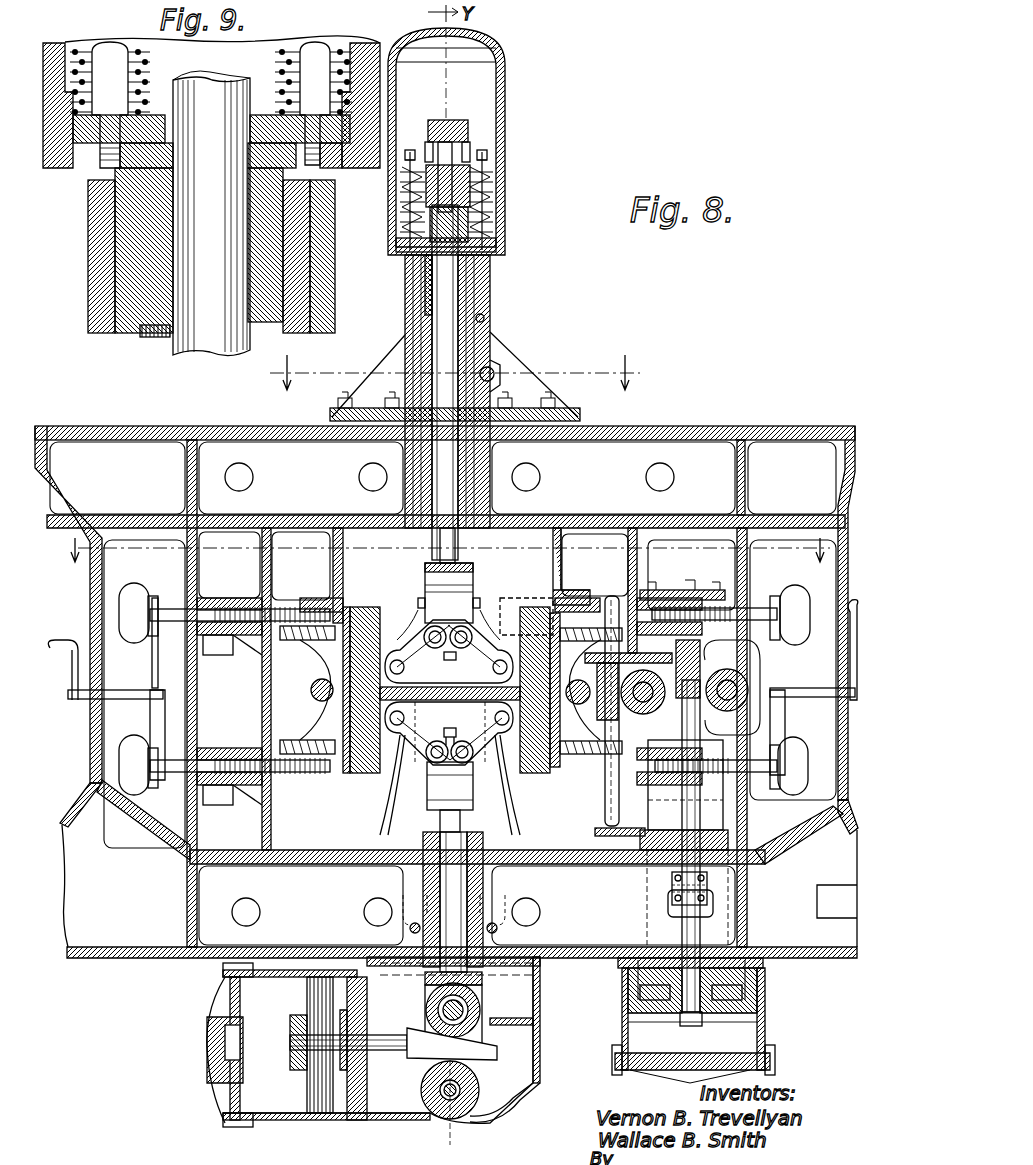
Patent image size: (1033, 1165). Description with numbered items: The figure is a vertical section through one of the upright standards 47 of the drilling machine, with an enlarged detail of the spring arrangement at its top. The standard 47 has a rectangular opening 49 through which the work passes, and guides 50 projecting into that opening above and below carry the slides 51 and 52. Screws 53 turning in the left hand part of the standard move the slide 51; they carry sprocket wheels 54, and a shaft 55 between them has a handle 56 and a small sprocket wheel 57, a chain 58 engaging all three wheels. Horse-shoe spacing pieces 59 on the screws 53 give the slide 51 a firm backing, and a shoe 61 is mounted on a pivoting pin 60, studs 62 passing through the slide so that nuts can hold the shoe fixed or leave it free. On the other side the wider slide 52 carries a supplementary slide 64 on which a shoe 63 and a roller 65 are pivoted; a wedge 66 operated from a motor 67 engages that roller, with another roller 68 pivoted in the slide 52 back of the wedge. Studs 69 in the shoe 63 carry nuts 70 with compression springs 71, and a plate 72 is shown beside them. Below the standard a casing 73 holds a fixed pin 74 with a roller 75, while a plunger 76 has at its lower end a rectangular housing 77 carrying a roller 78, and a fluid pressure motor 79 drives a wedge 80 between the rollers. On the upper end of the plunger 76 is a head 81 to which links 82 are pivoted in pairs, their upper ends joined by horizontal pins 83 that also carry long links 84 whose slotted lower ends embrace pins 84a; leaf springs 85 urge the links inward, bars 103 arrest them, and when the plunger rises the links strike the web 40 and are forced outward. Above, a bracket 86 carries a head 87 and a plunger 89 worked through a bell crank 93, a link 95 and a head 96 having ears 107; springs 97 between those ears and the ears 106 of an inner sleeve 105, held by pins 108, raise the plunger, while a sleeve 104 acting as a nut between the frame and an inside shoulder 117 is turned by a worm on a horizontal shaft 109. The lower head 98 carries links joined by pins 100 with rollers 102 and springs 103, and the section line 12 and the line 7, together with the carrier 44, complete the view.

In FIG. 8, the section line 7- 7 is at (453, 550).
In FIG. 8, the section line 12- 12 is at (461, 372).
In FIG. 8, the web 40 is at (450, 676).
In FIG. 8, the roller carrier plate 44 is at (449, 651).
In FIG. 8, the upright standard 47 is at (133, 426).
In FIG. 8, the rectangular opening 49 is at (355, 514).
In FIG. 8, the guides 50 is at (358, 530).
In FIG. 8, the slide 51 is at (449, 665).
In FIG. 8, the slide 52 is at (553, 570).
In FIG. 8, the screw 53 is at (232, 606).
In FIG. 8, the sprocket wheel 54 is at (158, 600).
In FIG. 8, the shaft 55 is at (90, 699).
In FIG. 8, the handle 56 is at (72, 660).
In FIG. 8, the small sprocket wheel 57 is at (155, 690).
In FIG. 8, the chain 58 is at (150, 720).
In FIG. 8, the spacing piece 59 is at (215, 655).
In FIG. 8, the pivoting pin 60 is at (318, 700).
In FIG. 8, the shoe 61 is at (345, 773).
In FIG. 8, the stud 62 is at (305, 626).
In FIG. 8, the shoe 63 is at (555, 773).
In FIG. 8, the supplementary slide 64 is at (640, 658).
In FIG. 8, the roller 65 is at (684, 792).
In FIG. 8, the wedge 66 is at (688, 655).
In FIG. 8, the motor 67 is at (740, 1030).
In FIG. 8, the roller 68 is at (740, 712).
In FIG. 8, the stud 69 is at (545, 582).
In FIG. 8, the nut 70 is at (611, 596).
In FIG. 8, the compression spring 71 is at (618, 780).
In FIG. 8, the cover plate 72 is at (668, 590).
In FIG. 8, the casing 73 is at (515, 1100).
In FIG. 8, the fixed pin 74 is at (440, 1105).
In FIG. 8, the roller 75 is at (460, 1115).
In FIG. 8, the plunger 76 is at (467, 895).
In FIG. 8, the rectangular housing 77 is at (485, 985).
In FIG. 8, the roller 78 is at (433, 1005).
In FIG. 8, the fluid pressure motor 79 is at (240, 1060).
In FIG. 8, the wedge 80 is at (420, 1055).
In FIG. 8, the head 81 is at (450, 797).
In FIG. 8, the link 82 is at (455, 726).
In FIG. 8, the horizontal pin 83 is at (449, 733).
In FIG. 8, the long link 84 is at (423, 816).
In FIG. 8, the pin 84a is at (410, 928).
In FIG. 8, the leaf spring 85 is at (415, 755).
In FIG. 8, the bracket 86 is at (490, 302).
In FIG. 8, the head 87 is at (505, 82).
In FIG. 9, the plunger 89 is at (211, 213).
In FIG. 8, the plunger 89 is at (445, 455).
In FIG. 8, the bell crank 93 is at (455, 120).
In FIG. 8, the link 95 is at (468, 150).
In FIG. 8, the head 96 is at (428, 150).
In FIG. 9, the spring 97 is at (275, 72).
In FIG. 8, the spring 97 is at (493, 212).
In FIG. 8, the head 98 is at (465, 590).
In FIG. 8, the pin 100 is at (397, 663).
In FIG. 8, the roller 102 is at (455, 651).
In FIG. 8, the spring 103 is at (413, 612).
In FIG. 8, the sleeve 104 is at (492, 330).
In FIG. 9, the inner sleeve 105 is at (148, 338).
In FIG. 8, the inner sleeve 105 is at (425, 277).
In FIG. 9, the ear 106 is at (88, 150).
In FIG. 8, the ear 106 is at (496, 245).
In FIG. 8, the ear 107 is at (487, 166).
In FIG. 9, the pin 108 is at (105, 52).
In FIG. 8, the pin 108 is at (487, 152).
In FIG. 8, the horizontal shaft 109 is at (497, 368).
In FIG. 8, the inside shoulder 117 is at (365, 380).